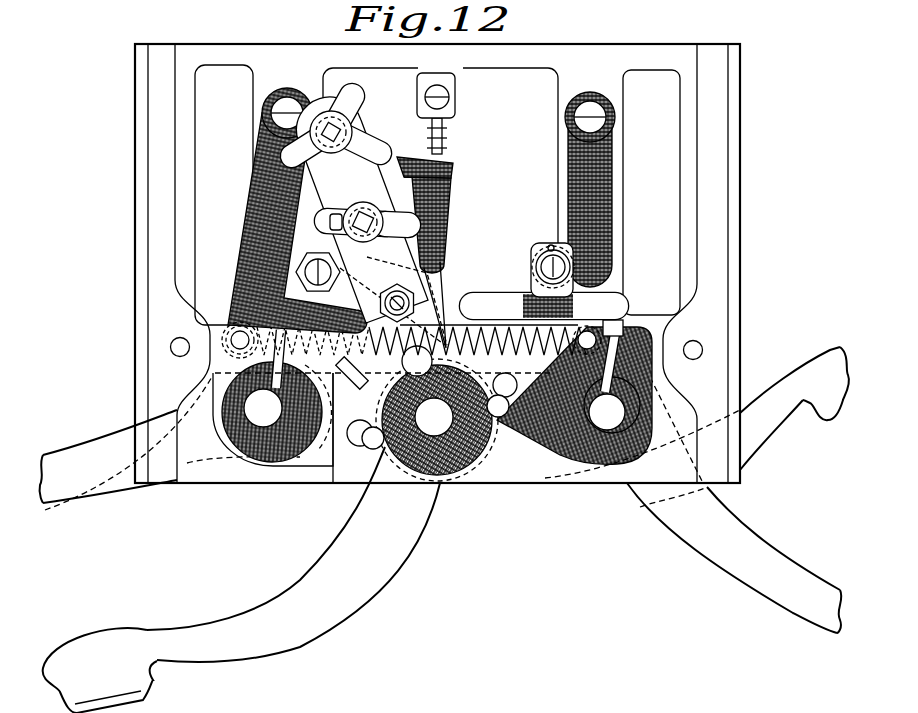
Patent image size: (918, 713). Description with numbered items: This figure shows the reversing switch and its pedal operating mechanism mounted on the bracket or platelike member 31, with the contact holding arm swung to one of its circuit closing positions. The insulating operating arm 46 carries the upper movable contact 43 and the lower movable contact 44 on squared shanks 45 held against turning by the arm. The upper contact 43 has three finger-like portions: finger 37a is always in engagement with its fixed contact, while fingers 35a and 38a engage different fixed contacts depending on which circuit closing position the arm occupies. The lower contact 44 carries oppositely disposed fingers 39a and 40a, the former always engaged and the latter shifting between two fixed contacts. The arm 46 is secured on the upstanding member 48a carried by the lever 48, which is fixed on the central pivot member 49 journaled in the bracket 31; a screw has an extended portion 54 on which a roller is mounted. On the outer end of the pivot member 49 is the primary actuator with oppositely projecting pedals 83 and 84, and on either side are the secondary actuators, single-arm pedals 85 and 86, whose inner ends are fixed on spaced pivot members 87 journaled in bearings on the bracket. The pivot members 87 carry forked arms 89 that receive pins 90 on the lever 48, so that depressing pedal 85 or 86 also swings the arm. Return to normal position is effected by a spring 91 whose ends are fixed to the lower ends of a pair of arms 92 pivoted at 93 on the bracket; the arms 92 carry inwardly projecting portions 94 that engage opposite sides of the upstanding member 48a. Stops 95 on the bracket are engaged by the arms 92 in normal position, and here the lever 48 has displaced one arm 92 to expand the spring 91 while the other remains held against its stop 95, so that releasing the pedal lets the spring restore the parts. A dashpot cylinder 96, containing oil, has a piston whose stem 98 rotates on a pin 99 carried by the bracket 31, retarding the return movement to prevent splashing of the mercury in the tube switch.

The bracket or platelike member 31 is at (147, 352).
The finger-like portion 35a is at (358, 100).
The finger-like portion 37a is at (290, 157).
The finger-like portion 38a is at (370, 153).
The finger-like portion 39a is at (317, 222).
The finger-like portion 40a is at (420, 225).
The upper movable contact 43 is at (316, 196).
The lower movable contact 44 is at (332, 276).
The squared shank 45 is at (328, 122).
The operating arm 46 is at (318, 222).
The lever 48 is at (477, 467).
The upstanding member 48a is at (430, 296).
The pivot member 49 is at (437, 413).
The extended portion 54 is at (268, 268).
The pedal 83 is at (797, 425).
The pedal 84 is at (233, 612).
The secondary actuator 85 is at (717, 557).
The secondary actuator 86 is at (103, 490).
The pivot member 87 is at (431, 391).
The arm 89 is at (313, 463).
The pin 90 is at (368, 450).
The spring 91 is at (473, 300).
The arm 92 is at (258, 195).
The pivot 93 is at (283, 120).
The inwardly projecting portion 94 is at (507, 295).
The stop 95 is at (551, 248).
The cylinder 96 is at (447, 210).
The stem 98 is at (447, 152).
The pin 99 is at (448, 100).